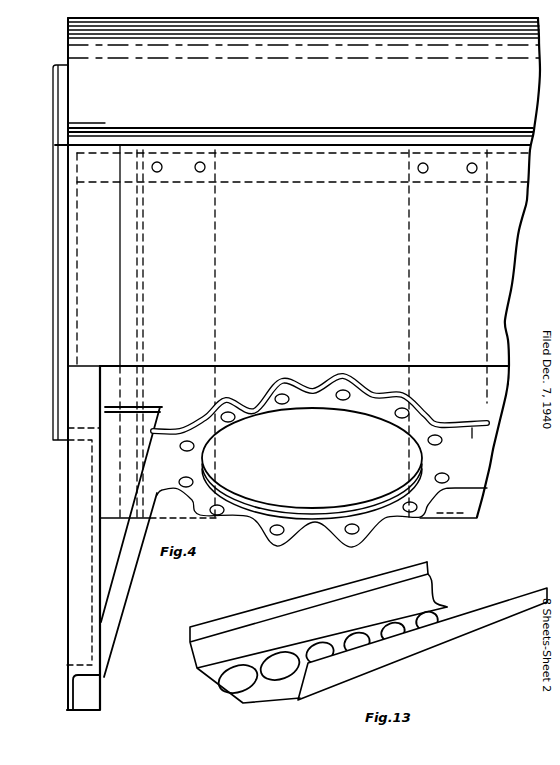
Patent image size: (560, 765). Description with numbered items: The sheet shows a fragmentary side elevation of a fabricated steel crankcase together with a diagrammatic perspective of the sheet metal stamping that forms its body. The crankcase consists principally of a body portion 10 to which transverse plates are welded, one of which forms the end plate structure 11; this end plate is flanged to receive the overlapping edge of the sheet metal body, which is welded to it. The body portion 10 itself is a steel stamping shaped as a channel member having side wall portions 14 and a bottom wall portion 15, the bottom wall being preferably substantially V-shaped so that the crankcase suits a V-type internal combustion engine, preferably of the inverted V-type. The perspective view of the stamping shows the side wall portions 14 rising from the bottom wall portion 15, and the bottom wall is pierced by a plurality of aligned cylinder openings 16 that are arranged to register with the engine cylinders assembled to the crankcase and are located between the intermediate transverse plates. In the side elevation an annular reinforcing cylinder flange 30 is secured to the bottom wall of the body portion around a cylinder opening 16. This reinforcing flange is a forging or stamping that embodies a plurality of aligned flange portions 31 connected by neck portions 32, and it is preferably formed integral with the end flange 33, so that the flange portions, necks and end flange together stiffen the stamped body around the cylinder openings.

In FIG. 4, the body portion 10 is at (0, 277).
In FIG. 4, the end plate structure 11 is at (33, 478).
In FIG. 4, the side wall portion 14 is at (503, 288).
In FIG. 13, the side wall portion 14 is at (200, 652).
In FIG. 13, the bottom wall portion 15 is at (268, 620).
In FIG. 4, the cylinder opening 16 is at (302, 498).
In FIG. 13, the cylinder opening 16 is at (282, 668).
In FIG. 4, the annular reinforcing cylinder flange 30 is at (421, 419).
In FIG. 4, the aligned flange portion 31 is at (307, 394).
In FIG. 4, the neck portion 32 is at (472, 438).
In FIG. 4, the end flange 33 is at (116, 600).